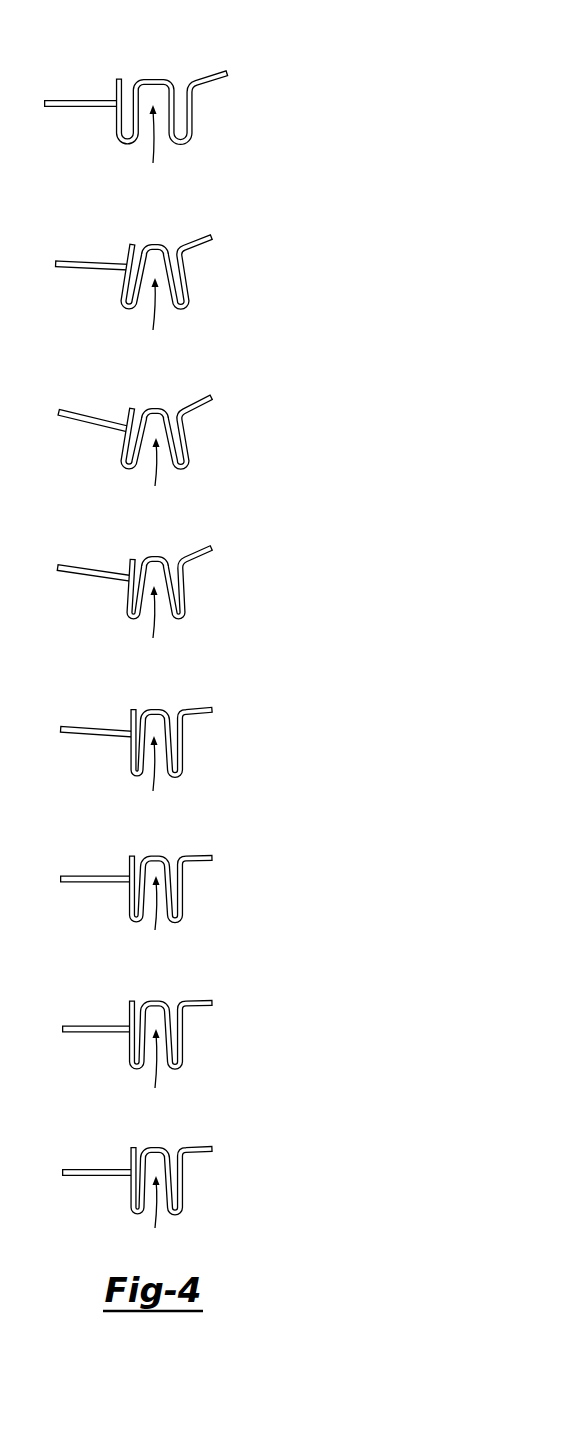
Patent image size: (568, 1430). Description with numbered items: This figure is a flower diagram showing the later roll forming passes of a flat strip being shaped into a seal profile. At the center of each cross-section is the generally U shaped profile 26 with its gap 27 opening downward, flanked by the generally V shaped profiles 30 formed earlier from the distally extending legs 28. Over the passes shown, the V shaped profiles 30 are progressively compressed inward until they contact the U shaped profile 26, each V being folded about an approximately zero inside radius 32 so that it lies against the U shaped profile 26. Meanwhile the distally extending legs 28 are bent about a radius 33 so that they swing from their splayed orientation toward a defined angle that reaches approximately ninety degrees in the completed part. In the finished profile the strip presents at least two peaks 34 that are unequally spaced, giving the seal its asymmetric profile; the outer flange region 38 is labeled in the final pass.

The U shaped profile 26 is at (173, 84).
The gap 27 is at (153, 678).
The distally extending legs 28 is at (67, 99).
The V shaped profiles 30 is at (117, 131).
The radius 32 is at (133, 313).
The radius 33 is at (119, 78).
The peaks 34 is at (128, 1210).
The flange 38 is at (83, 1169).